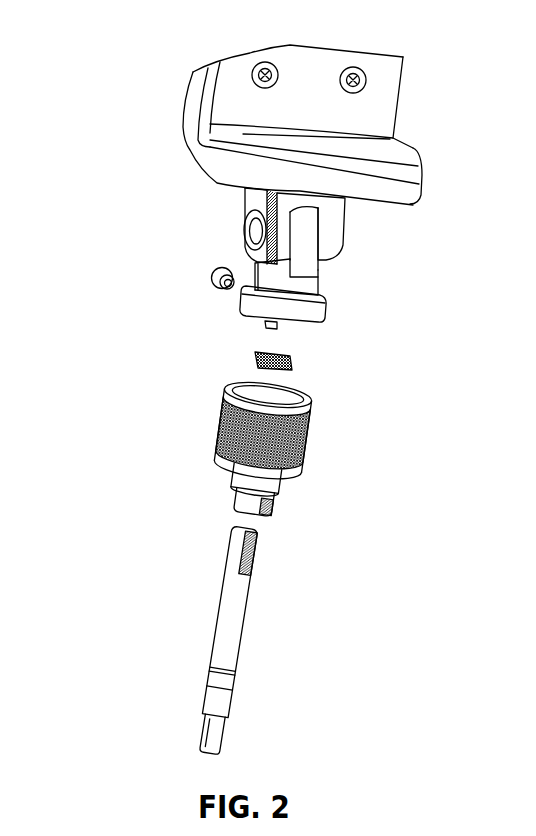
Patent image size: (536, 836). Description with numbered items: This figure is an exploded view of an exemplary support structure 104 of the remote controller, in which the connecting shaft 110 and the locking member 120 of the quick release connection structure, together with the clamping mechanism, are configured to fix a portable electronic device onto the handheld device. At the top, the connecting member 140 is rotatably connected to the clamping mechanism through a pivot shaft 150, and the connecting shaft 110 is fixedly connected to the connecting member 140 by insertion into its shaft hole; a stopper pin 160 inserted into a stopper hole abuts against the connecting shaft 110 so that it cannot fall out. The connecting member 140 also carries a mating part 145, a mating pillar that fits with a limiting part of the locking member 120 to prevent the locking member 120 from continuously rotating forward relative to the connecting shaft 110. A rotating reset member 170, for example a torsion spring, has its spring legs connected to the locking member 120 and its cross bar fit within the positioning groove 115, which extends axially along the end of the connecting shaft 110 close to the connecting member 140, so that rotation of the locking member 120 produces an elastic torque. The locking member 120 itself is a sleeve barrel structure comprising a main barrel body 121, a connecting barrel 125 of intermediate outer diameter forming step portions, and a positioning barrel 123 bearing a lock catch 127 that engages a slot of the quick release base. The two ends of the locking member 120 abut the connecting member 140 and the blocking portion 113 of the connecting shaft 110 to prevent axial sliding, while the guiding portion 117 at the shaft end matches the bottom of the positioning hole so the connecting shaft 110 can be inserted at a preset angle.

The support structure 104 is at (135, 98).
The connecting shaft 110 is at (228, 635).
The blocking portion 113 is at (208, 693).
The positioning groove 115 is at (232, 540).
The guiding portion 117 is at (202, 740).
The locking member 120 is at (337, 475).
The main barrel body 121 is at (310, 418).
The positioning barrel 123 is at (245, 497).
The connecting barrel 125 is at (253, 475).
The lock catch 127 is at (331, 535).
The connecting member 140 is at (290, 279).
The mating part 145 is at (271, 328).
The pivot shaft 150 is at (247, 227).
The stopper pin 160 is at (211, 279).
The rotating reset member 170 is at (253, 369).